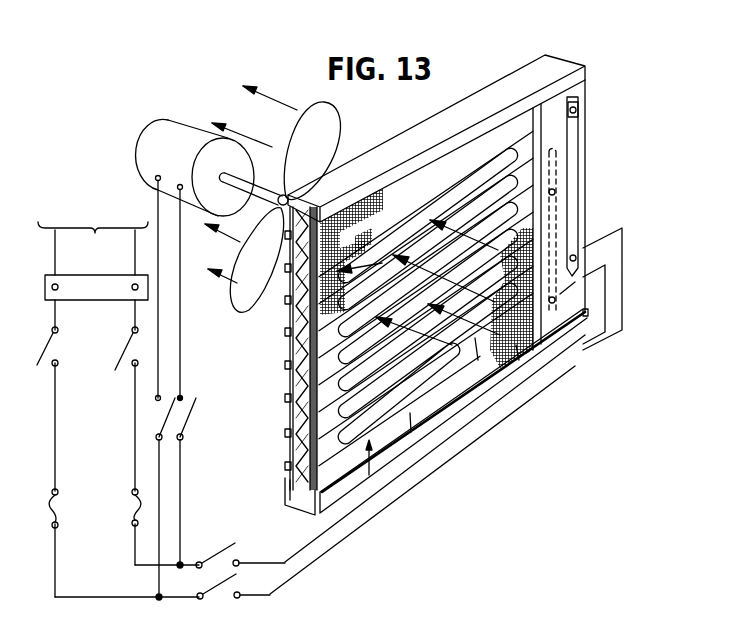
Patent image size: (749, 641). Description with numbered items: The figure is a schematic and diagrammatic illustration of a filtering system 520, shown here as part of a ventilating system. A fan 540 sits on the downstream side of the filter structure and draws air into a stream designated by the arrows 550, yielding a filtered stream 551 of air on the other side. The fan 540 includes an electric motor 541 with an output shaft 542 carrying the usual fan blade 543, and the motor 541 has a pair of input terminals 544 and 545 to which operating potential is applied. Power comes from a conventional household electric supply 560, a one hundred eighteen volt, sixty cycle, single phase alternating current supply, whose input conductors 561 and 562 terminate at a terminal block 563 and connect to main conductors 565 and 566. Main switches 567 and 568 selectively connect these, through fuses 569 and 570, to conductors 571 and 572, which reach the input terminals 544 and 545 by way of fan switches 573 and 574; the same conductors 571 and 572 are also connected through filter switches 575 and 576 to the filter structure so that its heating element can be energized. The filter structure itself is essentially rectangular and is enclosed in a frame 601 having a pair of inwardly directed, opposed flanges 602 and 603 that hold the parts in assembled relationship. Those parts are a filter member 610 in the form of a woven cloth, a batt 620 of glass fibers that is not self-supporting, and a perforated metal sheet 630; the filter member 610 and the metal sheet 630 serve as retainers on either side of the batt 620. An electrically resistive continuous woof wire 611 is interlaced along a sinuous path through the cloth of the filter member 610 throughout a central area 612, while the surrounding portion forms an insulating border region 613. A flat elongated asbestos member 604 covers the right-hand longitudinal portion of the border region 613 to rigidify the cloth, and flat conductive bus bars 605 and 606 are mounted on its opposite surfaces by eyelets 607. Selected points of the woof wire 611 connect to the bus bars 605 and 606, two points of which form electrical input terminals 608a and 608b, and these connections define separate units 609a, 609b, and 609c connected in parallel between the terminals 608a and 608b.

The filtering system 520 is at (642, 99).
The fan 540 is at (200, 88).
The electric motor 541 is at (161, 126).
The output shaft 542 is at (291, 187).
The fan blade 543 is at (333, 143).
The input terminal 544 is at (156, 177).
The input terminal 545 is at (181, 185).
The arrows designating air stream 550 is at (466, 338).
The filtered stream of air 551 is at (224, 278).
The household electric supply 560 is at (100, 194).
The input conductor 561 is at (134, 263).
The input conductor 562 is at (68, 248).
The terminal block 563 is at (96, 287).
The main conductor 565 is at (134, 309).
The main conductor 566 is at (58, 327).
The main switch 567 is at (120, 353).
The main switch 568 is at (46, 352).
The fuse 569 is at (134, 510).
The fuse 570 is at (57, 496).
The conductor 571 is at (134, 560).
The conductor 572 is at (105, 597).
The fan switch 573 is at (185, 433).
The fan switch 574 is at (160, 413).
The filter switch 575 is at (232, 544).
The filter switch 576 is at (221, 586).
The frame 601 is at (568, 56).
The inwardly directed flange 602 is at (288, 478).
The inwardly directed flange 603 is at (332, 498).
The asbestos member 604 is at (570, 322).
The bus bar 605 is at (576, 130).
The bus bar 606 is at (557, 171).
The eyelets 607 is at (577, 108).
The electrical input terminal 608a is at (575, 256).
The electrical input terminal 608b is at (555, 300).
The separate unit 609a is at (310, 438).
The separate unit 609b is at (362, 333).
The separate unit 609c is at (293, 306).
The filter member 610 is at (369, 476).
The woof wire 611 is at (519, 360).
The central area 612 is at (478, 360).
The insulating border region 613 is at (411, 432).
The batt of glass fibers 620 is at (300, 497).
The perforated metal sheet 630 is at (292, 333).